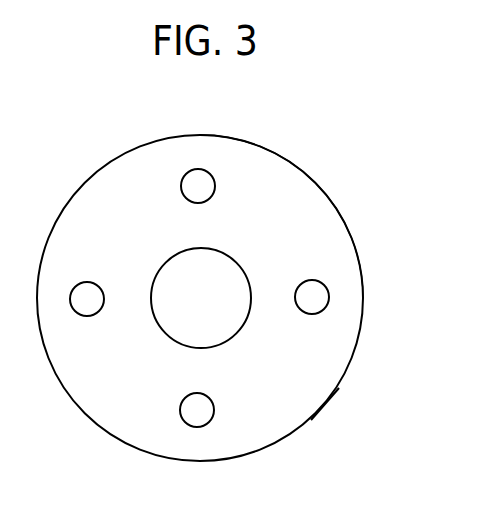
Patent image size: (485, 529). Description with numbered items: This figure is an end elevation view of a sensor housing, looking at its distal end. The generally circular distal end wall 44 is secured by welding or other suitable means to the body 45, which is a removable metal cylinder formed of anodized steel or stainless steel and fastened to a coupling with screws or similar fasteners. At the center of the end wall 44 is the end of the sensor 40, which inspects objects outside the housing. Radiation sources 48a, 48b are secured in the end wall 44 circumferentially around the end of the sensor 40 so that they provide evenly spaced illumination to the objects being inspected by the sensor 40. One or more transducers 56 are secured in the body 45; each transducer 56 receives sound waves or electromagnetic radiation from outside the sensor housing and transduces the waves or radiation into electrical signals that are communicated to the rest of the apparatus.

The sensor 40 is at (162, 263).
The distal end wall 44 is at (323, 217).
The body 45 is at (362, 268).
The radiation source 48a is at (202, 173).
The radiation source 48b is at (178, 409).
The transducer 56 is at (330, 400).